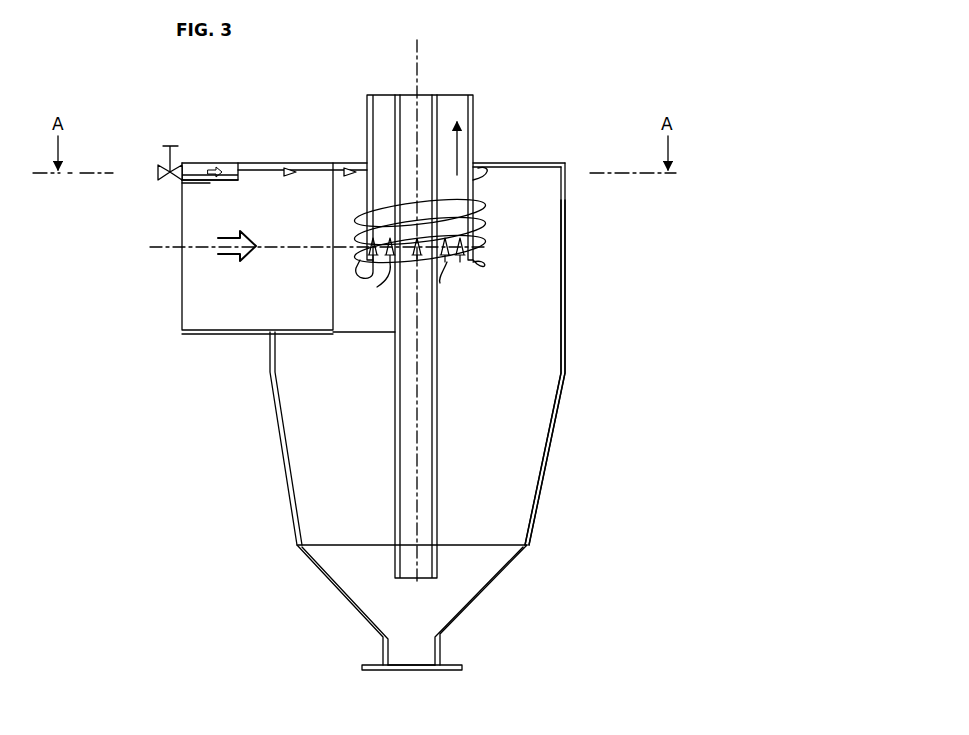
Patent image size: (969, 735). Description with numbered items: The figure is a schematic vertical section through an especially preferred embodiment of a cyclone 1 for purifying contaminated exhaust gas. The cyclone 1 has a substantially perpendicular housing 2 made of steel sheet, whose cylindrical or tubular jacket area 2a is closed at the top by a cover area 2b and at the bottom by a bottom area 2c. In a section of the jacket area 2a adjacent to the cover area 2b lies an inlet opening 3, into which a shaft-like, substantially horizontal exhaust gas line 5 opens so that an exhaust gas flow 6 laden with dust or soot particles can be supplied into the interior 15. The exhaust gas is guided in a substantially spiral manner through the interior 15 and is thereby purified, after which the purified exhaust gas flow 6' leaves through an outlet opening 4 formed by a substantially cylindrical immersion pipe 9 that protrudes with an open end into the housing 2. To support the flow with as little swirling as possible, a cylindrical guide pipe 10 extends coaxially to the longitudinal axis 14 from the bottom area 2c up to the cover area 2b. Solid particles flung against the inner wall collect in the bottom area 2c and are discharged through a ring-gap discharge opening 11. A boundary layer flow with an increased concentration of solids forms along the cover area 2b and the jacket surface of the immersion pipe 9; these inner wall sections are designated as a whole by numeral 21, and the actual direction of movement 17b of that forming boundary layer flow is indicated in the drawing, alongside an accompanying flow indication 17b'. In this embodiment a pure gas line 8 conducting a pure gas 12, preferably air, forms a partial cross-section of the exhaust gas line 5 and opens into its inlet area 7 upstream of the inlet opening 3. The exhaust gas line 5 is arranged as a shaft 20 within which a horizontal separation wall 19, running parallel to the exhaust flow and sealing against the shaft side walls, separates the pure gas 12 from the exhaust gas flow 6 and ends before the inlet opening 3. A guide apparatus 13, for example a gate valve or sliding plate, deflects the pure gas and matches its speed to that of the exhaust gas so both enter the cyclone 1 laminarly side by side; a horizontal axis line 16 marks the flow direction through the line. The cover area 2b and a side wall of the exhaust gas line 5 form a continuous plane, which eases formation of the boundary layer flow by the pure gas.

The cyclone 1 is at (640, 222).
The housing 2 is at (556, 438).
The jacket area 2a is at (563, 330).
The cover area 2b is at (531, 160).
The bottom area 2c is at (448, 633).
The inlet opening 3 is at (356, 320).
The outlet opening 4 is at (453, 262).
The exhaust gas line 5 is at (213, 337).
The exhaust gas flow 6 is at (229, 243).
The discharged exhaust gas flow 6' is at (448, 149).
The inlet area 7 is at (241, 163).
The pure gas line 8 is at (192, 183).
The immersion pipe 9 is at (473, 184).
The guide pipe 10 is at (437, 463).
The discharge opening 11 is at (412, 670).
The pure gas 12 is at (210, 170).
The guide apparatus 13 is at (167, 181).
The longitudinal axis 14 is at (416, 75).
The interior 15 is at (502, 404).
The inlet axis 16 is at (160, 249).
The direction of movement of the boundary layer flow 17b is at (453, 219).
The coil feed line 17b' is at (299, 201).
The separation wall 19 is at (195, 184).
The shaft 20 is at (158, 170).
The inner wall section 21 is at (365, 212).